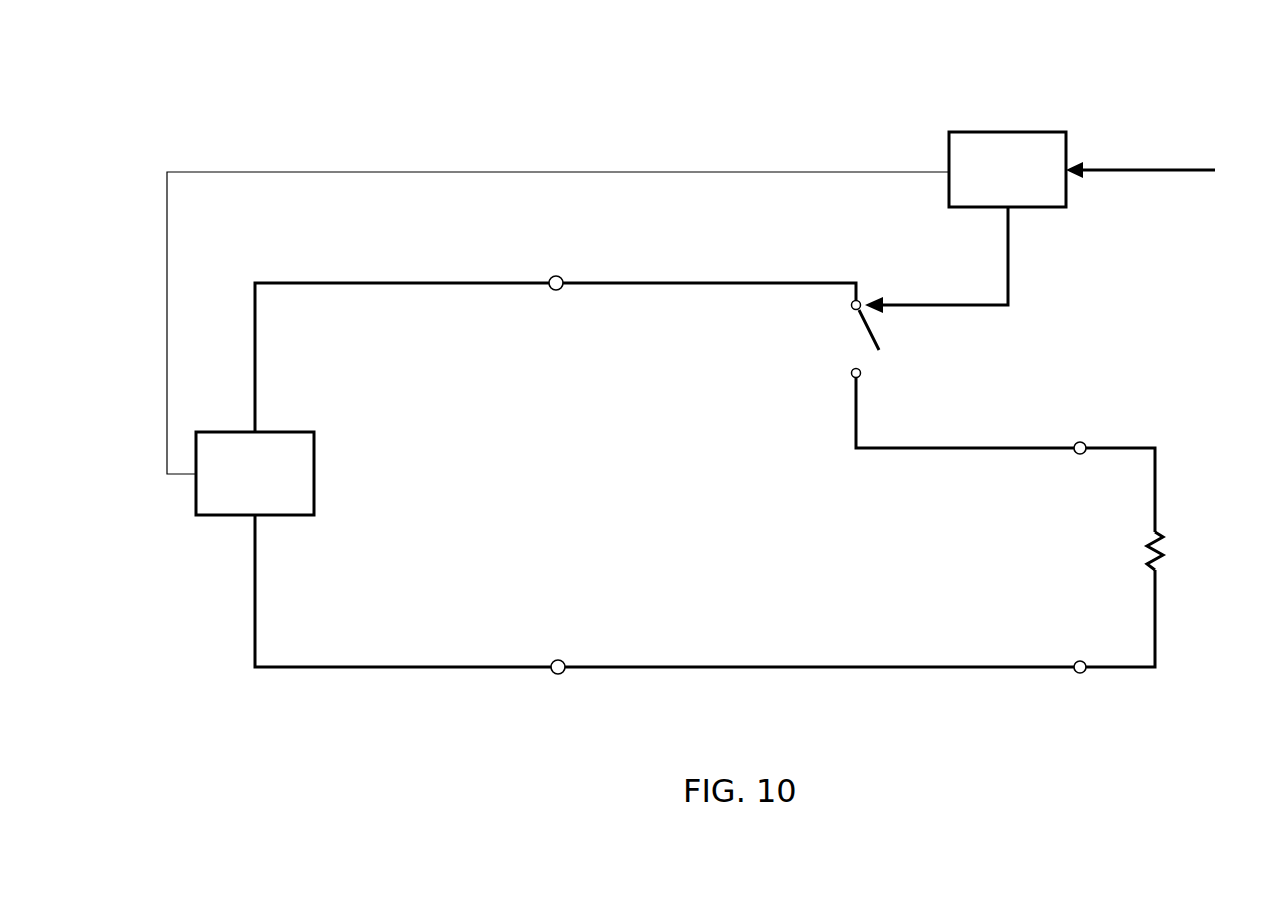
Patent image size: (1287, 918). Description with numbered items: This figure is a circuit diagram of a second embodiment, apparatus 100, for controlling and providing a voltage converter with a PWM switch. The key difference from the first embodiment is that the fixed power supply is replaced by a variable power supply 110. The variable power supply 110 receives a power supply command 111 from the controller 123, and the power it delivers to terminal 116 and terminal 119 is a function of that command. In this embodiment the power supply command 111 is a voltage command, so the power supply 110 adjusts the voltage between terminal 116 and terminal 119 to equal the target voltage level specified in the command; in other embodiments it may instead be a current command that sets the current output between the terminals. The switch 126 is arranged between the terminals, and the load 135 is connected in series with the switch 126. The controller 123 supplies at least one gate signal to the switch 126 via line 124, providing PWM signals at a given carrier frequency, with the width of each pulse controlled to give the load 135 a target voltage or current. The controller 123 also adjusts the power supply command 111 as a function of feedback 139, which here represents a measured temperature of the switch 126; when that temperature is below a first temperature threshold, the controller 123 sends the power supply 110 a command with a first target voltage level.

The apparatus 100 is at (234, 102).
The variable power supply 110 is at (255, 473).
The power supply command 111 is at (558, 308).
The terminal 116 is at (550, 276).
The terminal 119 is at (554, 675).
The controller 123 is at (1053, 131).
The line 124 is at (1008, 260).
The switch 126 is at (872, 330).
The load 135 is at (1167, 547).
The feedback 139 is at (1170, 171).